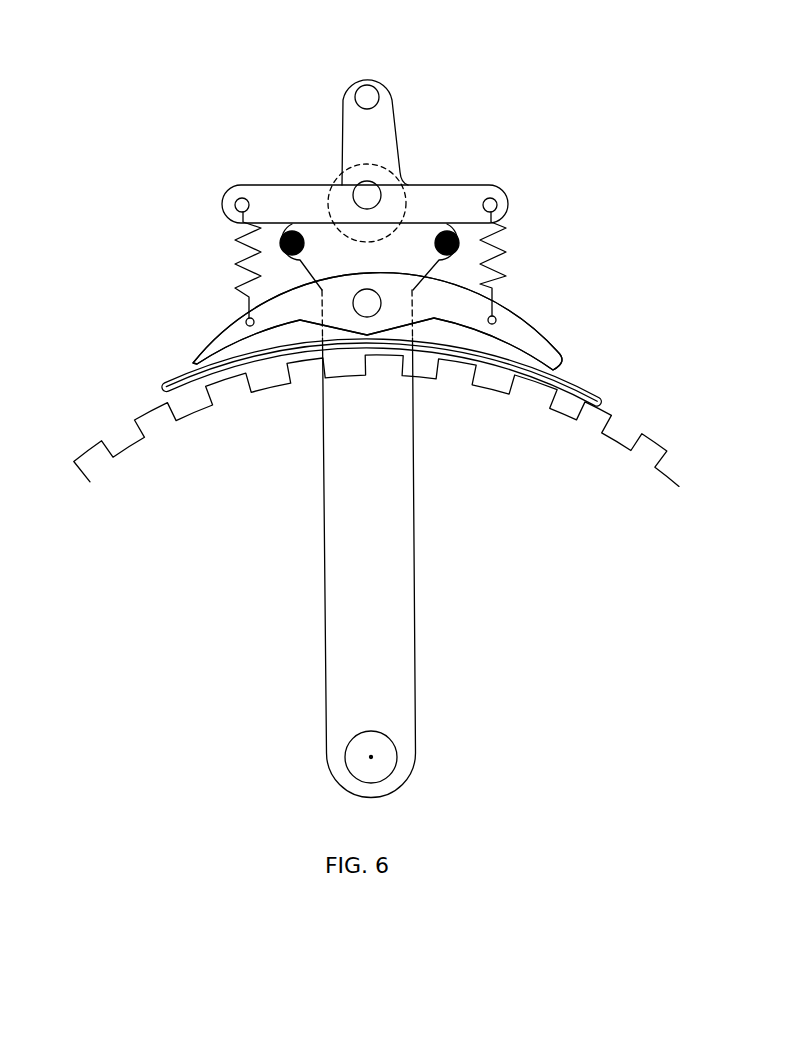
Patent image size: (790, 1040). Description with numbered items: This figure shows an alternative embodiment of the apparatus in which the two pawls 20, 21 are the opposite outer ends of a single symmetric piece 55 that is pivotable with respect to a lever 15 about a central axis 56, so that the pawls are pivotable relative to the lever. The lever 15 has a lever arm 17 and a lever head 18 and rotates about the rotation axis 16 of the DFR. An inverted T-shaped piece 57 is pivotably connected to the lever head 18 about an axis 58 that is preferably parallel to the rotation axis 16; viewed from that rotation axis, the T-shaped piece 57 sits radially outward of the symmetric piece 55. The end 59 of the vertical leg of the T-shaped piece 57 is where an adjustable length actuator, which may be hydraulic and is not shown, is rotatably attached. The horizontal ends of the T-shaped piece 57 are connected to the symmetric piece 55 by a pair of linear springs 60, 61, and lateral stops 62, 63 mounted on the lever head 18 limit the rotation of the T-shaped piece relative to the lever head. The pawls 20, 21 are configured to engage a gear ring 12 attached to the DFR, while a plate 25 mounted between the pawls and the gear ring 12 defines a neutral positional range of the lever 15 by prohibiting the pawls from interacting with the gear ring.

The gear ring 12 is at (163, 418).
The lever 15 is at (310, 511).
The rotation axis 16 is at (371, 757).
The lever arm 17 is at (395, 455).
The lever head 18 is at (372, 242).
The pawl 20 is at (196, 352).
The pawl 21 is at (557, 353).
The plate 25 is at (263, 355).
The symmetric piece 55 is at (400, 300).
The central axis 56 is at (364, 300).
The inverted T-shaped piece 57 is at (355, 140).
The axis 58 is at (367, 197).
The end of the vertical leg 59 is at (372, 94).
The linear spring 60 is at (228, 266).
The linear spring 61 is at (505, 268).
The lateral stop 62 is at (283, 233).
The lateral stop 63 is at (453, 233).